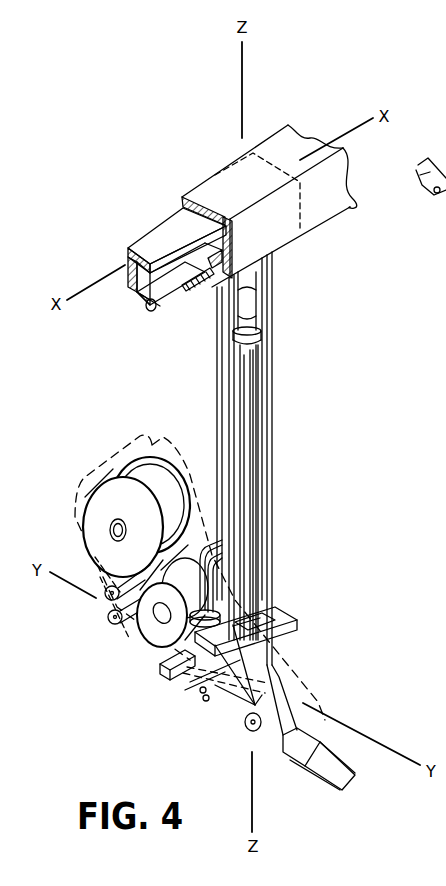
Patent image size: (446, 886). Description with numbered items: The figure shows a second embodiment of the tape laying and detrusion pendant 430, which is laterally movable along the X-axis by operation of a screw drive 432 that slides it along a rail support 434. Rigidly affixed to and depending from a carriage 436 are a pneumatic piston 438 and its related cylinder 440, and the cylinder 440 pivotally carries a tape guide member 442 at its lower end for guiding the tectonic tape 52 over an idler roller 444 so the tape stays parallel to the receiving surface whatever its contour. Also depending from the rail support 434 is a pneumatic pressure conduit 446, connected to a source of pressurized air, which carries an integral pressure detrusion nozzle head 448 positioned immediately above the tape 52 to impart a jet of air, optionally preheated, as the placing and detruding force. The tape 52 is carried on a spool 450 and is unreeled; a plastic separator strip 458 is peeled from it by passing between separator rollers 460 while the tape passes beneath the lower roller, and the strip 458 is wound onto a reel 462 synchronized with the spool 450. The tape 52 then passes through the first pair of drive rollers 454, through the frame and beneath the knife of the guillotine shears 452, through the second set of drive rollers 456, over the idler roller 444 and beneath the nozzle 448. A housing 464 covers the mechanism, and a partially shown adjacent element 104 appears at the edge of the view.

The detrusion pendant 430 is at (280, 352).
The screw drive 432 is at (207, 297).
The rail support 434 is at (189, 247).
The carriage 436 is at (238, 204).
The pneumatic piston 438 is at (248, 326).
The cylinder 440 is at (248, 421).
The tape guide member 442 is at (290, 629).
The idler roller 444 is at (252, 730).
The pneumatic pressure conduit 446 is at (279, 487).
The pressure detrusion nozzle head 448 is at (318, 743).
The spool 450 is at (156, 570).
The guillotine shears 452 is at (172, 688).
The drive rollers 454 is at (161, 667).
The drive rollers 456 is at (200, 698).
The plastic separator strip 458 is at (104, 594).
The separator rollers 460 is at (110, 620).
The reel 462 is at (143, 645).
The housing 464 is at (152, 446).
The tectonic tape 52 is at (96, 557).
The adjacent component 104 is at (431, 138).